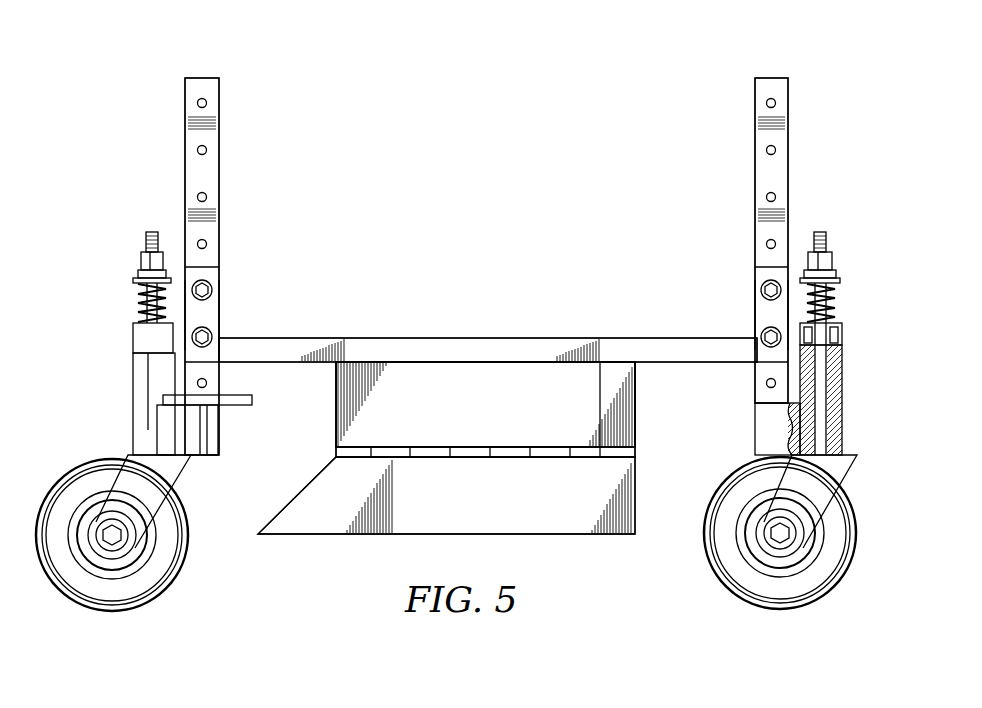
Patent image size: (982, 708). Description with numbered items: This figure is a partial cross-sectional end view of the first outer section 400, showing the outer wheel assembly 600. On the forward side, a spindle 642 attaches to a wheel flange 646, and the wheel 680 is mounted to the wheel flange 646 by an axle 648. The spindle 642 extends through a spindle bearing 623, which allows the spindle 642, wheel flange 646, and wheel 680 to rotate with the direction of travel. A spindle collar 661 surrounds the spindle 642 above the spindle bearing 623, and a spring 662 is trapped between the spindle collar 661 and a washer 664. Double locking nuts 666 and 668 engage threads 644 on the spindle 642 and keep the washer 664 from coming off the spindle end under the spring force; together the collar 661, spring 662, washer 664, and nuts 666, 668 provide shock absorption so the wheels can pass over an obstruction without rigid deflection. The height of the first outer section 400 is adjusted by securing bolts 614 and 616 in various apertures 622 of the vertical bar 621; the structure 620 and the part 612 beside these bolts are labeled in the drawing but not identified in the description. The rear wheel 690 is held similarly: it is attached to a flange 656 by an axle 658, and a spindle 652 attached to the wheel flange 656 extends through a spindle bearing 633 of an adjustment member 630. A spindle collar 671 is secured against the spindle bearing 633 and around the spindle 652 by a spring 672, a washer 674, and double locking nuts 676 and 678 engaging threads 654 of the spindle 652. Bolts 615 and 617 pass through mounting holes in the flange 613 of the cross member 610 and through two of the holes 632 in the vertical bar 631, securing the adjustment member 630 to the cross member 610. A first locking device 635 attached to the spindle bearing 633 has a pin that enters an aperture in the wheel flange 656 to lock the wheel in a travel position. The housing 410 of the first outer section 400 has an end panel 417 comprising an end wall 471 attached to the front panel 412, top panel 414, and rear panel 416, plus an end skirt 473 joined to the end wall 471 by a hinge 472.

The wheel assembly 600 is at (490, 150).
The adjustment member 630 is at (245, 70).
The right upright support assembly 620 is at (736, 70).
The vertical bar 631 is at (220, 182).
The holes 632 is at (197, 103).
The bolt 617 is at (270, 338).
The bolt 615 is at (216, 340).
The flange 613 is at (213, 316).
The vertical bar 621 is at (789, 158).
The apertures 622 is at (776, 103).
The bolt 616 is at (703, 338).
The bolt 614 is at (765, 340).
The mounting plate 612 is at (765, 313).
The cross member 610 is at (533, 338).
The first outer section 400 is at (460, 358).
The top panel 414 is at (380, 356).
The housing 410 is at (636, 410).
The front panel 412 is at (336, 403).
The rear panel 416 is at (635, 400).
The end panel 417 is at (618, 435).
The hinge 472 is at (590, 458).
The end wall 471 is at (504, 416).
The end skirt 473 is at (504, 504).
The spring 672 is at (140, 330).
The spindle bearing 633 is at (135, 422).
The spindle collar 671 is at (148, 372).
The first locking device 635 is at (188, 438).
The threads 654 is at (152, 230).
The locking nut 678 is at (141, 256).
The locking nut 676 is at (138, 273).
The washer 674 is at (134, 282).
The spindle 652 is at (138, 300).
The wheel flange 656 is at (178, 478).
The rear wheel 690 is at (112, 611).
The axle 658 is at (123, 538).
The threads 644 is at (821, 230).
The locking nut 668 is at (832, 258).
The locking nut 666 is at (836, 274).
The washer 664 is at (840, 281).
The spring 662 is at (836, 306).
The spindle collar 661 is at (842, 343).
The spindle 642 is at (822, 390).
The spindle bearing 623 is at (842, 425).
The wheel flange 646 is at (848, 478).
The wheel 680 is at (780, 609).
The axle 648 is at (773, 535).